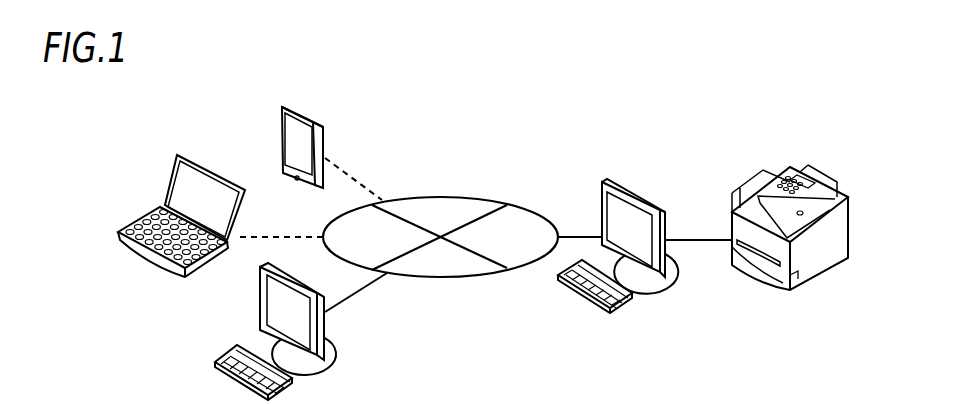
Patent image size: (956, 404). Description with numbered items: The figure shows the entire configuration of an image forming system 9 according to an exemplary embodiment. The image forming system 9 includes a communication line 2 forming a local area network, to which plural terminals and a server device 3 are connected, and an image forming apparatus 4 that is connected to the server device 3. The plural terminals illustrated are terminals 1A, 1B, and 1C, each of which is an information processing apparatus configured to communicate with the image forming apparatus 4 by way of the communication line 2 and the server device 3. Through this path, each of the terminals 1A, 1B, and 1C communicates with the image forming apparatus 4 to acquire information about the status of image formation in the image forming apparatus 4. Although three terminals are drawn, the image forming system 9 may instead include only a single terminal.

The terminal 1A is at (323, 138).
The terminal 1B is at (217, 168).
The terminal 1C is at (335, 330).
The communication line 2 is at (500, 200).
The server device 3 is at (623, 182).
The image forming apparatus 4 is at (760, 182).
The image forming system 9 is at (705, 342).